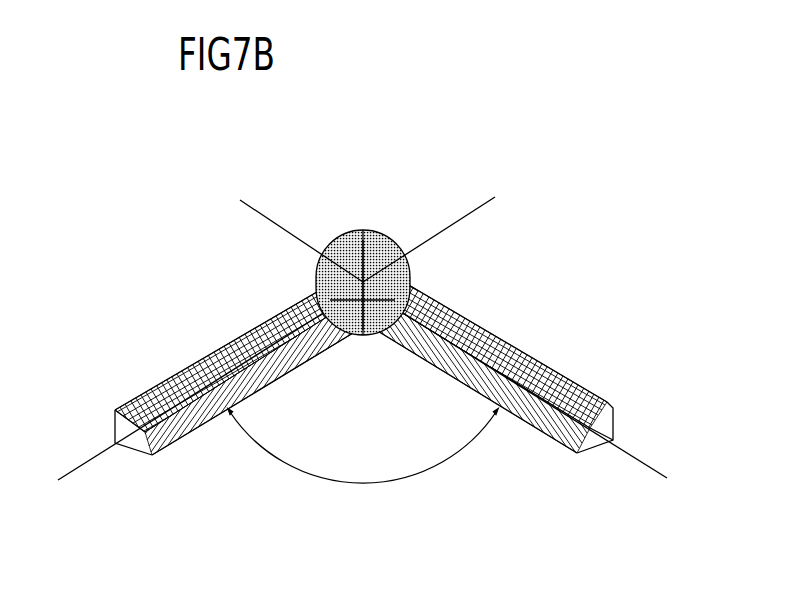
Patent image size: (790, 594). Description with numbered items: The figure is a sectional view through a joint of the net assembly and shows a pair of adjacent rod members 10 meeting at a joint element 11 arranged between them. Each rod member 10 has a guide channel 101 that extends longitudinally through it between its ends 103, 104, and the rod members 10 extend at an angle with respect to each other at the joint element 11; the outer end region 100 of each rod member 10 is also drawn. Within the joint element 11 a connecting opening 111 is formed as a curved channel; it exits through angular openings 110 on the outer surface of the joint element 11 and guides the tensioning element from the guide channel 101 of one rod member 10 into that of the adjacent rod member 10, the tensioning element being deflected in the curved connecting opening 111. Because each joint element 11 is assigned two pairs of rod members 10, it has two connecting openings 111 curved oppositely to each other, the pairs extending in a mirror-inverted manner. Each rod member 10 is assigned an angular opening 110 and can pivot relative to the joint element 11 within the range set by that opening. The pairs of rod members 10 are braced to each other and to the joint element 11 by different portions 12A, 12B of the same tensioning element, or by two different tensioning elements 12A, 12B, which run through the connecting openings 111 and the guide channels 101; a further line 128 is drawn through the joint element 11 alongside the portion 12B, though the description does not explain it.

The rod member 10 is at (260, 388).
The joint element 11 is at (378, 237).
The tensioning element portion 12A is at (78, 468).
The tensioning element portion 12B is at (268, 218).
The end face of bar 100 is at (140, 445).
The guide channel 101 is at (298, 364).
The end of rod member 103 is at (152, 455).
The end of rod member 104 is at (325, 305).
The angular opening 110 is at (360, 277).
The connecting opening 111 is at (362, 273).
The axis of joint 128 is at (473, 213).